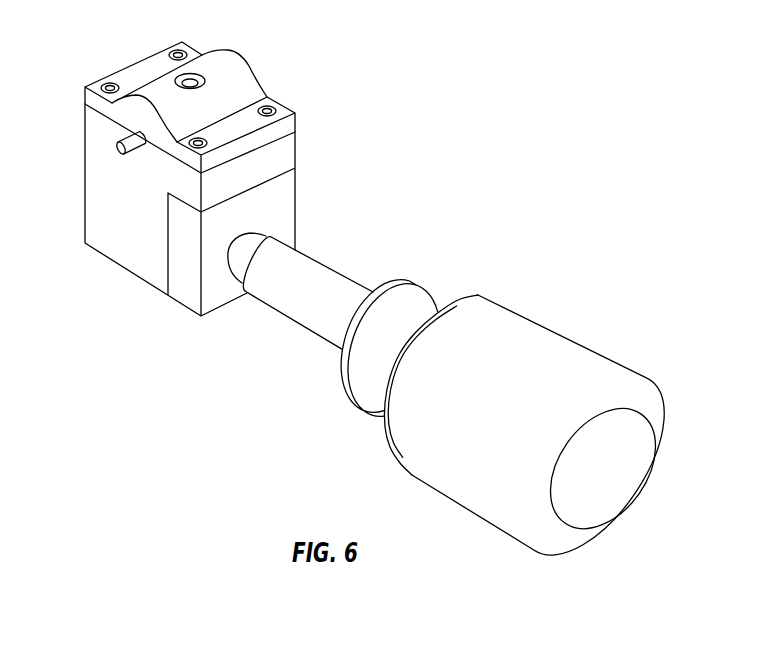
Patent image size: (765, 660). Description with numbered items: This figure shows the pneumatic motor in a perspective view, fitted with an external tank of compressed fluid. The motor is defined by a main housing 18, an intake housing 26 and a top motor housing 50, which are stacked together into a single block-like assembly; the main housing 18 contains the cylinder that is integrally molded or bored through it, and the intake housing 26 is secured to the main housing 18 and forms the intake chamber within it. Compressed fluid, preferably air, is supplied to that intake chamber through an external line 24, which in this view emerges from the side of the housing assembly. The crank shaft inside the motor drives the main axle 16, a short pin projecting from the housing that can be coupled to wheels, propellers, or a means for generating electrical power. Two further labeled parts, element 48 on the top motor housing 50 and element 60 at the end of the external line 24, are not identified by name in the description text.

The main axle 16 is at (112, 147).
The main housing 18 is at (103, 234).
The external line 24 is at (245, 232).
The intake housing 26 is at (283, 153).
The screw hole 48 is at (190, 84).
The top motor housing 50 is at (248, 88).
The knob 60 is at (550, 338).